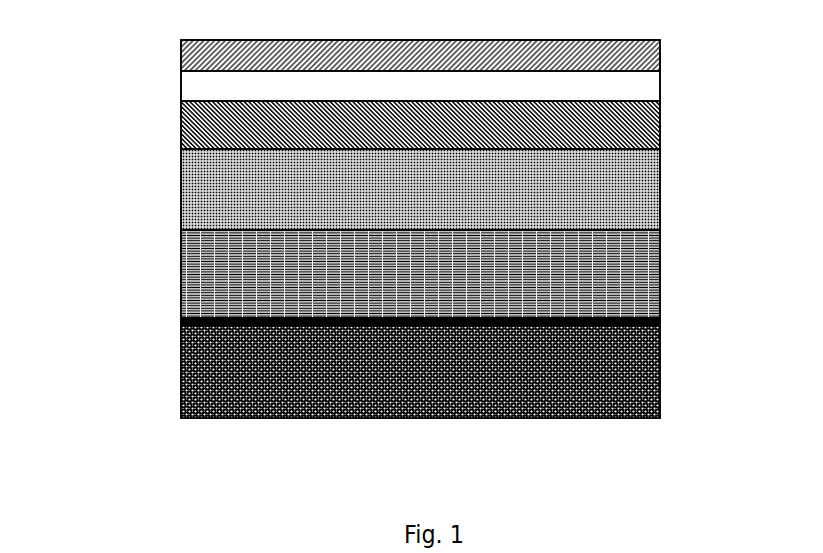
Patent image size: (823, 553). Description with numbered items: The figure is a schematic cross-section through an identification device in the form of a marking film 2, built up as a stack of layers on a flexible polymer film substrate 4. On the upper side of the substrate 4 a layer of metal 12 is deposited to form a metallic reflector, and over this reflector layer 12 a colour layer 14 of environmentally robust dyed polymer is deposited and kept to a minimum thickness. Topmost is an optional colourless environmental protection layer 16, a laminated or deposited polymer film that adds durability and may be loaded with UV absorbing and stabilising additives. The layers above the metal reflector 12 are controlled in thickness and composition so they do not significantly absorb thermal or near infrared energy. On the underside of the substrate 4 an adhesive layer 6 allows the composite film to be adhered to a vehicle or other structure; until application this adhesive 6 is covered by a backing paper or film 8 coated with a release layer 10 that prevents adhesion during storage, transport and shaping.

The marking film 2 is at (100, 97).
The environmental protection layer 16 is at (653, 47).
The colour layer 14 is at (653, 85).
The metal reflector layer 12 is at (653, 124).
The flexible polymer film substrate 4 is at (653, 190).
The adhesive layer 6 is at (653, 258).
The release layer 10 is at (653, 312).
The backing paper or film 8 is at (653, 365).